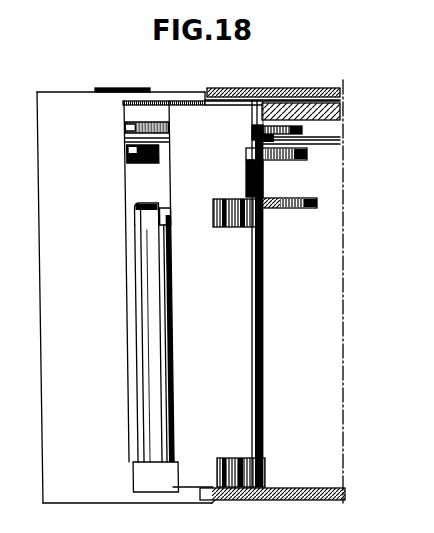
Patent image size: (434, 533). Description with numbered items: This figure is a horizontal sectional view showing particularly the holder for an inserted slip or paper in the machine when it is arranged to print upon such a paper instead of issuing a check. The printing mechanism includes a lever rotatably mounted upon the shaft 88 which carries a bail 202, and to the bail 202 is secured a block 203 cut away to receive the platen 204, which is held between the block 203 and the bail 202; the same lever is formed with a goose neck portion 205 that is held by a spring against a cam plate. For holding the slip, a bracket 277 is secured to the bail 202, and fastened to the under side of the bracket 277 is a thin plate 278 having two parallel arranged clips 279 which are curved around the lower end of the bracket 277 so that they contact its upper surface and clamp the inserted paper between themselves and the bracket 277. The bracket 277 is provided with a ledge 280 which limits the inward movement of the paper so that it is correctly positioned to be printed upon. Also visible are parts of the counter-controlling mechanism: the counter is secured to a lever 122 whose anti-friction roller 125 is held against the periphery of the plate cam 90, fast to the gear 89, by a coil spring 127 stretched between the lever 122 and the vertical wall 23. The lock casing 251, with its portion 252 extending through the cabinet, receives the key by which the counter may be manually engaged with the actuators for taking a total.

The projecting portion of lock casing 252 is at (134, 90).
The vertical wall 23 is at (133, 111).
The lock casing 251 is at (128, 126).
The coil spring 127 is at (128, 157).
The bail 202 is at (141, 215).
The platen 204 is at (148, 258).
The block 203 is at (135, 307).
The bracket 277 is at (184, 347).
The clips 279 is at (231, 227).
The plate cam 90 is at (255, 136).
The ledge 280 is at (253, 141).
The anti-friction roller 125 is at (302, 132).
The lever 122 is at (338, 145).
The gear 89 is at (306, 154).
The shaft 88 is at (264, 183).
The goose neck portion 205 is at (318, 204).
The thin plate 278 is at (264, 263).